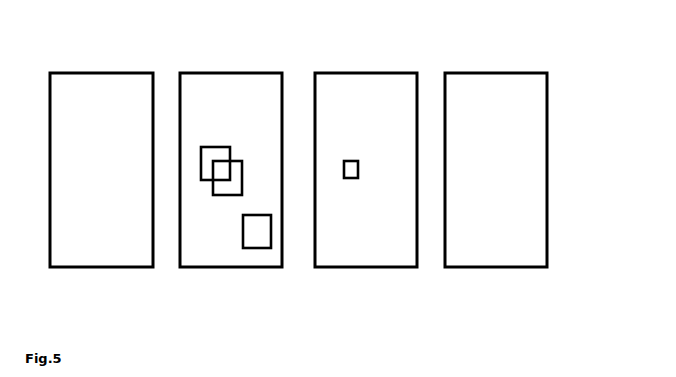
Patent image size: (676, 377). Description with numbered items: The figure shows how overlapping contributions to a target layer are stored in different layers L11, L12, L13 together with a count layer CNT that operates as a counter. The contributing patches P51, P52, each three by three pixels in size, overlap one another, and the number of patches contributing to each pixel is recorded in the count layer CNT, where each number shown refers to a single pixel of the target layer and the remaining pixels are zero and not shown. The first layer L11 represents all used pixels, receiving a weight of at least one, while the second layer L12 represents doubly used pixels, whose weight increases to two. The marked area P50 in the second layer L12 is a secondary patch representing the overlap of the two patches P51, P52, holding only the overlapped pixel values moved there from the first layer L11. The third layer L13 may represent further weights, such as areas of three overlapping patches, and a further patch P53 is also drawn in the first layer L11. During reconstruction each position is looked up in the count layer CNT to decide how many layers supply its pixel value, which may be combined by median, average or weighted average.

The count layer CNT is at (101, 185).
The first layer L11 is at (231, 192).
The second layer L12 is at (366, 192).
The third layer L13 is at (496, 192).
The marked area P50 is at (350, 161).
The contributing patch P51 is at (216, 147).
The contributing patch P52 is at (222, 161).
The third image patch in layer L11 P53 is at (256, 215).